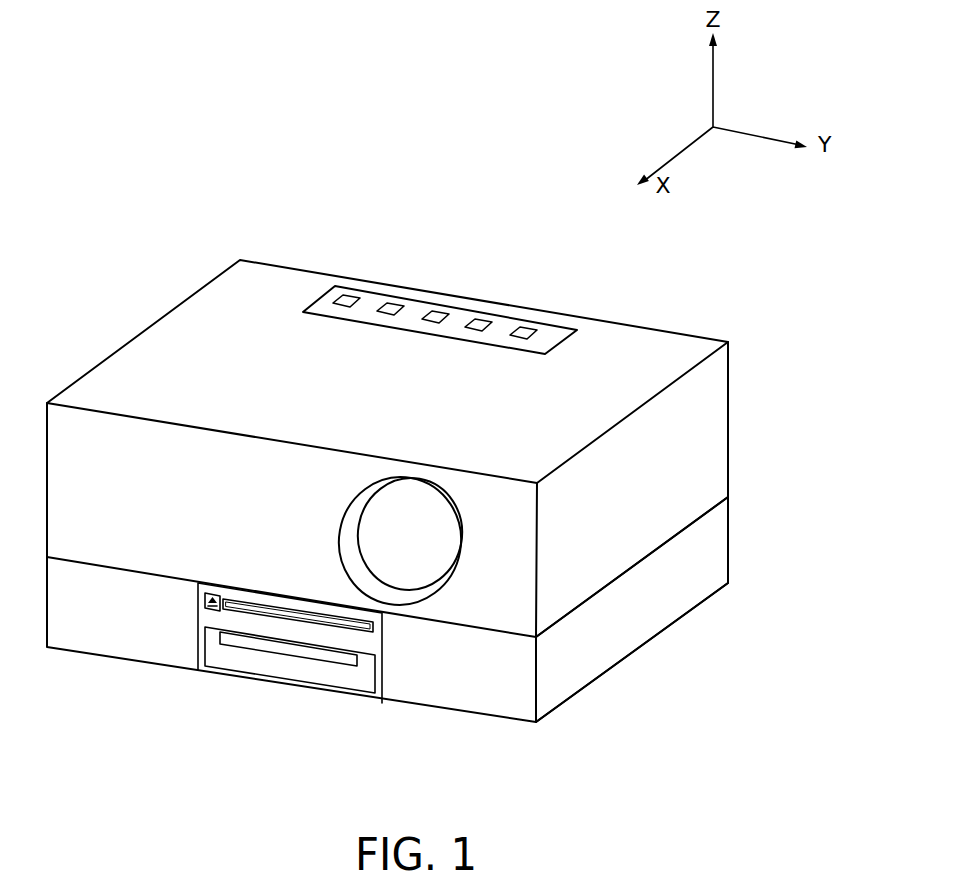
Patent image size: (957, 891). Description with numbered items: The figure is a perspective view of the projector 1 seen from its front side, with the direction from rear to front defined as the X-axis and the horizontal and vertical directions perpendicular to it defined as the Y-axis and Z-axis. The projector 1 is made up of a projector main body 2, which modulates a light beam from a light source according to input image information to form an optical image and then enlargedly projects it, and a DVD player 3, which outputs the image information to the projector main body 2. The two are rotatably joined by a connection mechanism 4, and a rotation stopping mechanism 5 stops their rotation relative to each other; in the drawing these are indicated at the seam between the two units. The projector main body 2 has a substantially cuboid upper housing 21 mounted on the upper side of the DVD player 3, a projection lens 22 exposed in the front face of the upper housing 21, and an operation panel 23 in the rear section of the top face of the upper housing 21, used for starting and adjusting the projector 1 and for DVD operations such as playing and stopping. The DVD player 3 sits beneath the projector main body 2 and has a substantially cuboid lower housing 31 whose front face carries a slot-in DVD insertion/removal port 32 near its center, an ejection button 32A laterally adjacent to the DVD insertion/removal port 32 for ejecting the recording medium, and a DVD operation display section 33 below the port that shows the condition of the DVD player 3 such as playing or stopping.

The projector 1 is at (438, 477).
The projector main body 2 is at (438, 448).
The upper housing 21 is at (710, 447).
The projection lens 22 is at (462, 543).
The operation panel 23 is at (565, 342).
The DVD player 3 is at (429, 609).
The lower housing 31 is at (652, 625).
The DVD insertion/removal port 32 is at (279, 623).
The ejection button 32A is at (202, 601).
The DVD operation display section 33 is at (382, 677).
The connection mechanism 4 is at (710, 510).
The rotation stopping mechanism 5 is at (772, 498).